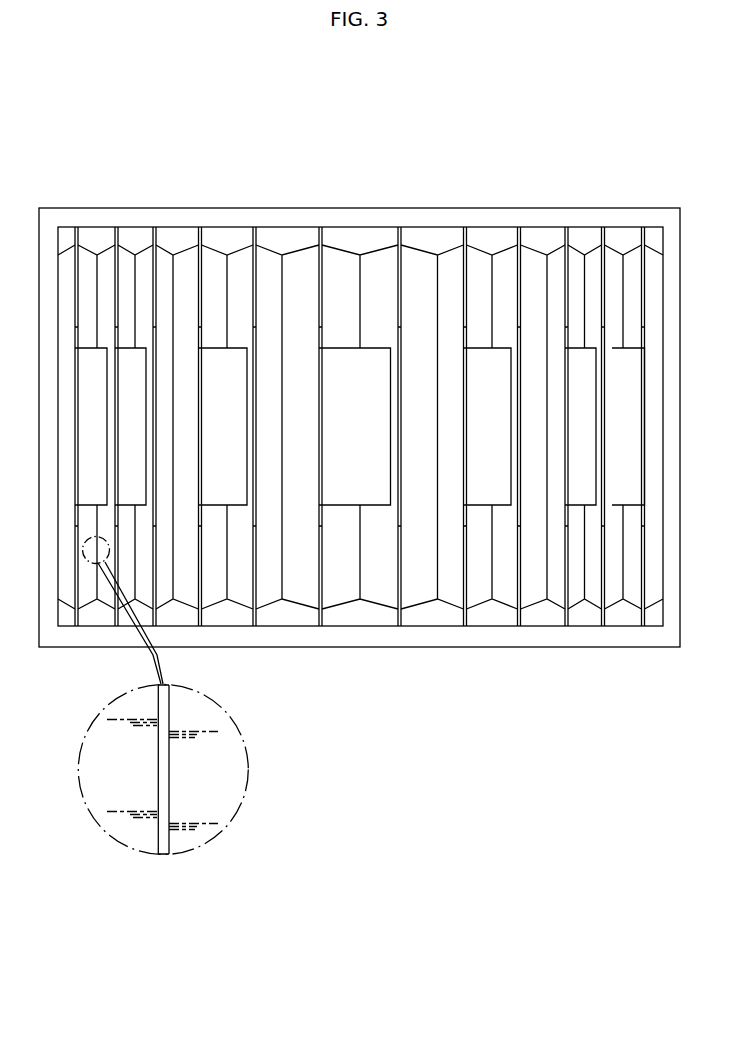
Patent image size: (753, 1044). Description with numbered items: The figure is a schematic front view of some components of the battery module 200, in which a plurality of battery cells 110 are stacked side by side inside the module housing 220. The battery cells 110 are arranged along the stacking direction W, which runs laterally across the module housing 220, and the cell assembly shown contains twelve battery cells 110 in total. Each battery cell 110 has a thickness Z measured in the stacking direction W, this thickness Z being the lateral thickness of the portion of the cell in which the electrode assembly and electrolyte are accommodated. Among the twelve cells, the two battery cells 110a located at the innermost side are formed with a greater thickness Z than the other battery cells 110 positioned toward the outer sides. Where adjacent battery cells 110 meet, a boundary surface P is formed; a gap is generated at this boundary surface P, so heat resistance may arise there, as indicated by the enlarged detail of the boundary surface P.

The battery module 200 is at (171, 90).
The module housing 220 is at (191, 206).
The battery cell 110 is at (143, 248).
The innermost battery cell 110a is at (385, 607).
The boundary surface P is at (164, 768).
The thickness Z is at (360, 181).
The stacking direction W is at (616, 172).